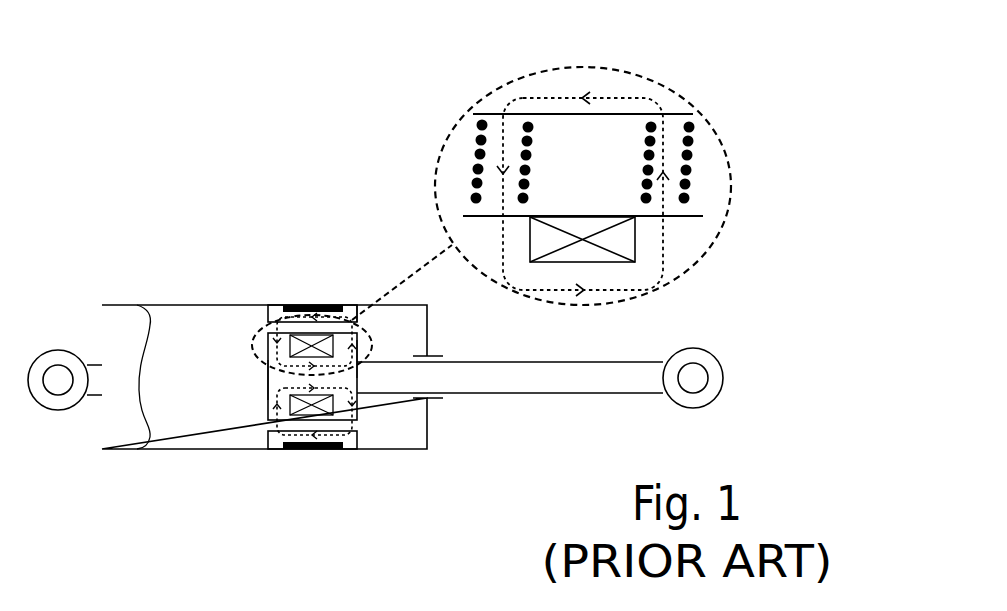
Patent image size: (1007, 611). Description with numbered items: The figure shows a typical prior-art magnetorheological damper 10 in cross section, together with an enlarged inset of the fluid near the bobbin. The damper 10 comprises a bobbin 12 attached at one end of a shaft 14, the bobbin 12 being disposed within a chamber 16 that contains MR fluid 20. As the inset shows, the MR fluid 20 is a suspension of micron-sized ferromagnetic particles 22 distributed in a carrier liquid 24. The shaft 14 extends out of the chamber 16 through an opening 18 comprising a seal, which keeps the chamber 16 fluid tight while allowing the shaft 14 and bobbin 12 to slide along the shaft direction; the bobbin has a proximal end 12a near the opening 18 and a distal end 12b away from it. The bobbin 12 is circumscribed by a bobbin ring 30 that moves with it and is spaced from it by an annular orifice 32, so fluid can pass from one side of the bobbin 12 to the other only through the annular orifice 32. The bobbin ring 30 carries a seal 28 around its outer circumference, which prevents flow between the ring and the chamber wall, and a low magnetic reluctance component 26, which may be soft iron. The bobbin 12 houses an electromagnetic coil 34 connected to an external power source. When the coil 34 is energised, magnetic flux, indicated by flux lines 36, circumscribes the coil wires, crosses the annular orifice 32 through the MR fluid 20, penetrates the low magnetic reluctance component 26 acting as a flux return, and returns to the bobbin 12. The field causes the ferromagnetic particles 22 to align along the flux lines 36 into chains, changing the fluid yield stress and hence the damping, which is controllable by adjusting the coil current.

The magnetorheological (MR) damper 10 is at (156, 116).
The bobbin 12 is at (358, 416).
The proximal end 12a is at (357, 378).
The distal end 12b is at (268, 383).
The shaft 14 is at (586, 382).
The chamber 16 is at (162, 450).
The opening 18 is at (447, 343).
The MR fluid 20 is at (186, 313).
The ferromagnetic particles 22 is at (480, 140).
The carrier liquid 24 is at (450, 173).
The low magnetic reluctance component 26 is at (352, 306).
The seal 28 is at (304, 304).
The bobbin ring 30 is at (274, 301).
The annular orifice 32 is at (265, 425).
The electromagnetic coil 34 is at (310, 418).
The flux lines 36 is at (345, 437).